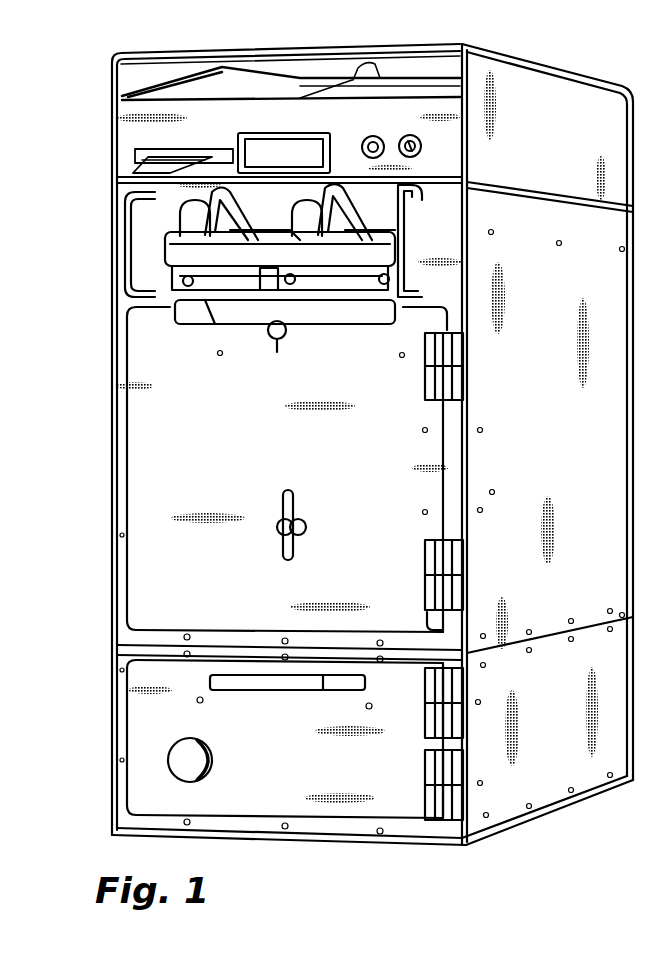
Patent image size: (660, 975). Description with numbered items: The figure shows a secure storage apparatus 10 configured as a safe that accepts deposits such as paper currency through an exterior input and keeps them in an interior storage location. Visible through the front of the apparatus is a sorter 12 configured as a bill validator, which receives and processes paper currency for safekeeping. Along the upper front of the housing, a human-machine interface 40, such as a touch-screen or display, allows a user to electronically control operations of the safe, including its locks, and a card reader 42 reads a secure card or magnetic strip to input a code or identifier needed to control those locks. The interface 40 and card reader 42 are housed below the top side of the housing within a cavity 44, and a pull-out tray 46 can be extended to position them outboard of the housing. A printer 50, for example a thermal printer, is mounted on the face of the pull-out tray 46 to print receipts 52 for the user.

The secure storage apparatus 10 is at (566, 45).
The sorter 12 is at (152, 250).
The interface 40 is at (284, 92).
The card reader 42 is at (384, 72).
The cavity 44 is at (301, 58).
The pull-out tray 46 is at (414, 88).
The printer 50 is at (140, 152).
The receipts 52 is at (135, 166).